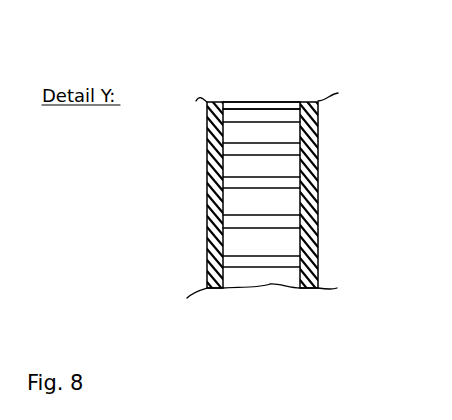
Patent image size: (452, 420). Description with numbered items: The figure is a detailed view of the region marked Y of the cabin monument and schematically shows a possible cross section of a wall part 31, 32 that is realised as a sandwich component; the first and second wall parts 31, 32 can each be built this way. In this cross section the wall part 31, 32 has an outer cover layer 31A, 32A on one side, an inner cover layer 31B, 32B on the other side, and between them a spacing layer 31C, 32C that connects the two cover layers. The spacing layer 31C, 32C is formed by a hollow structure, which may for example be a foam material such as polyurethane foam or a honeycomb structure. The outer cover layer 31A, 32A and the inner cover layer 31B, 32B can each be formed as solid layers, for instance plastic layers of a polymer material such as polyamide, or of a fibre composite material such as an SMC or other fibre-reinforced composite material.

The first wall part 31 is at (172, 255).
The second wall part 32 is at (245, 178).
The outer cover layer 31A is at (208, 203).
The outer cover layer 32A is at (161, 192).
The inner cover layer 31B is at (318, 181).
The inner cover layer 32B is at (373, 192).
The spacing layer 31C is at (258, 101).
The spacing layer 32C is at (289, 70).